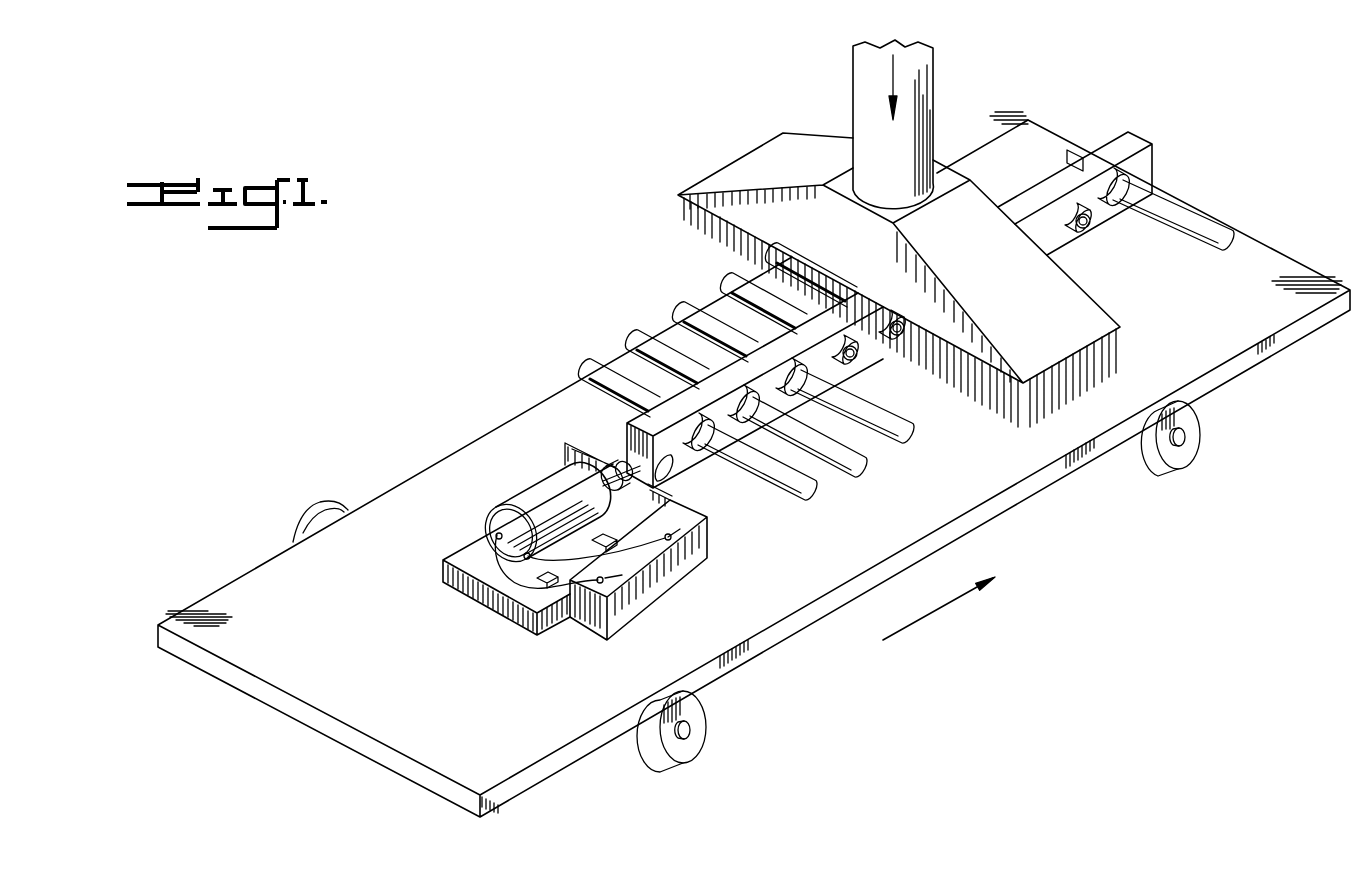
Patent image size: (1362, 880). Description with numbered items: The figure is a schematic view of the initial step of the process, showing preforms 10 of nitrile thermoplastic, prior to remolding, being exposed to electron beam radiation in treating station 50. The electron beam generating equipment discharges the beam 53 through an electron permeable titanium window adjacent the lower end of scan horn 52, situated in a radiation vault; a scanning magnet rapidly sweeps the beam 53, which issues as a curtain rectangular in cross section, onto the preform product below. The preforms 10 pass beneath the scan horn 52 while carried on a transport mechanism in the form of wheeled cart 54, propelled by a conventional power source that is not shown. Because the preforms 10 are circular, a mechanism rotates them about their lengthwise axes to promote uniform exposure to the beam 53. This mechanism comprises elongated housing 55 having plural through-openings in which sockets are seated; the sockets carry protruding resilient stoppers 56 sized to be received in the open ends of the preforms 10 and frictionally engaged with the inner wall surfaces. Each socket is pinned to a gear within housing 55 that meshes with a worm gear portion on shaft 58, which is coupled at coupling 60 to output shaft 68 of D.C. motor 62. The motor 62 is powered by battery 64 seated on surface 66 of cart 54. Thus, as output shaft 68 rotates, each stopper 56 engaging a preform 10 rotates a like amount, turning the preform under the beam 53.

The preform 10 is at (764, 488).
The treating station 50 is at (1088, 64).
The scan horn 52 is at (1082, 317).
The electron beam 53 is at (1060, 418).
The wheeled cart 54 is at (763, 666).
The elongated housing 55 is at (640, 423).
The resilient stopper 56 is at (847, 365).
The shaft 58 is at (630, 473).
The coupling 60 is at (613, 468).
The D.C. motor 62 is at (523, 498).
The battery 64 is at (657, 600).
The surface 66 is at (480, 707).
The output shaft 68 is at (657, 497).